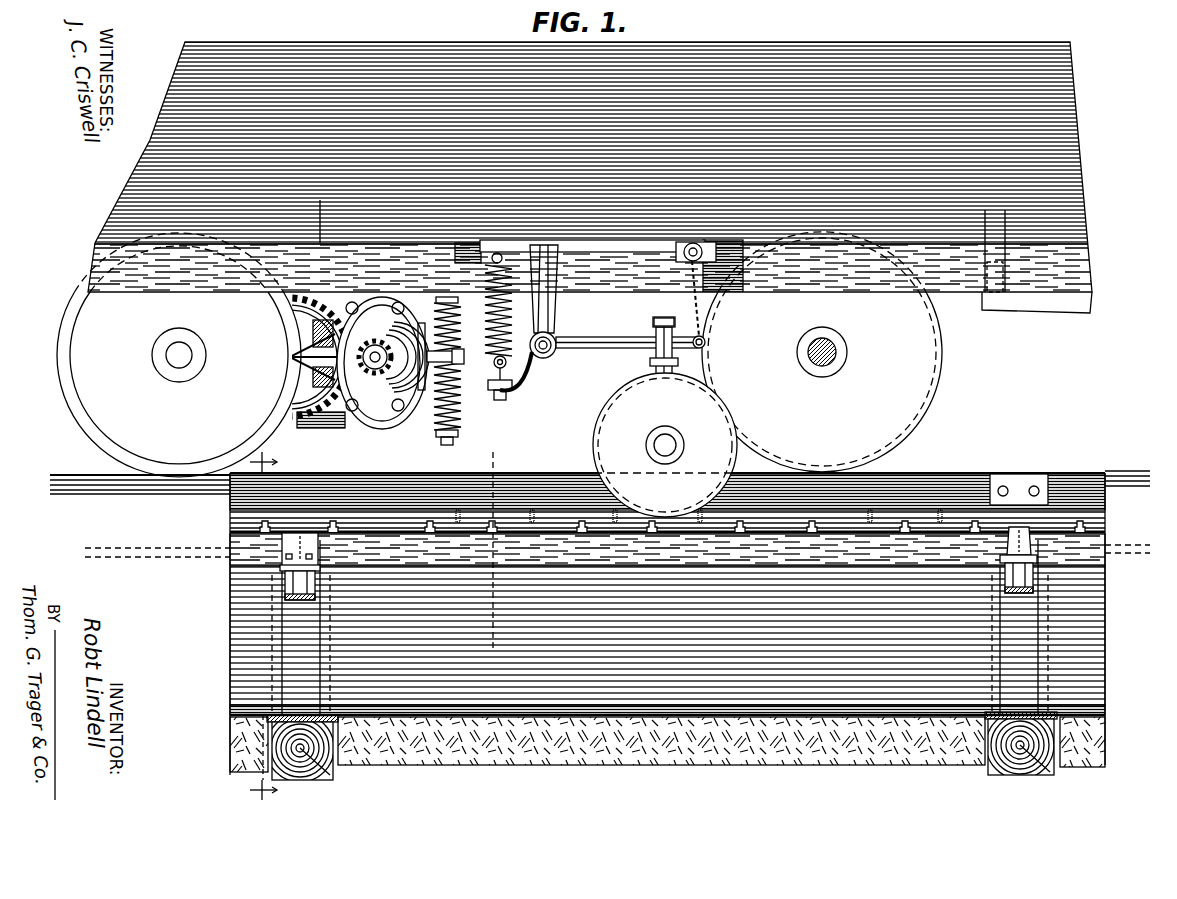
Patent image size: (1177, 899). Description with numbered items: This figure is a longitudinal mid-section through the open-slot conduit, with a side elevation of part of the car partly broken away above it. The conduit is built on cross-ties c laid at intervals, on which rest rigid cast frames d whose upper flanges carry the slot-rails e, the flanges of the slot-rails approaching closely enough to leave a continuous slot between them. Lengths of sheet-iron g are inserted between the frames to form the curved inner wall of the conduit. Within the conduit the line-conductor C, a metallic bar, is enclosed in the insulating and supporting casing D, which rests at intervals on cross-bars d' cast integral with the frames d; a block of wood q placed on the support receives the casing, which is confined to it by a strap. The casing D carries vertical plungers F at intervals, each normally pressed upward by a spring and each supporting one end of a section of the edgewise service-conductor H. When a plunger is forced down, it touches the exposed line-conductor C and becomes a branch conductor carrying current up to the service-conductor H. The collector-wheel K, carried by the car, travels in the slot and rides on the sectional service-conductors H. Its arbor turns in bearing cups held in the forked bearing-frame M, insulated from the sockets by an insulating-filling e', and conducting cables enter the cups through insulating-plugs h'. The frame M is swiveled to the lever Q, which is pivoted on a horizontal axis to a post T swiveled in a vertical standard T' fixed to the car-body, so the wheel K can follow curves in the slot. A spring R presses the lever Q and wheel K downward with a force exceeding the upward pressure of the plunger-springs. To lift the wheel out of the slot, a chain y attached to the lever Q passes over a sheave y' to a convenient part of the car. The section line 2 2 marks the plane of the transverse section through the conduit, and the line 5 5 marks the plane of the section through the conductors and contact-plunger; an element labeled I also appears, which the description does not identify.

The spring R is at (482, 320).
The sheave y' is at (696, 237).
The chain y is at (710, 298).
The vertical standard T' is at (555, 289).
The post T is at (542, 351).
The lever Q is at (576, 350).
The forked bearing-frame M is at (678, 363).
The insulating-plugs h' is at (652, 313).
The slot-rails e is at (600, 481).
The service-conductor H is at (232, 522).
The plungers F is at (580, 533).
The insulating and supporting casing D is at (222, 556).
The line-conductor C is at (113, 547).
The foundation I is at (667, 624).
The cast frames d is at (660, 627).
The block of wood q is at (280, 556).
The cross-bars d' is at (659, 592).
The insulating-filling e' is at (1019, 514).
The cross-ties c is at (322, 780).
The lengths of sheet-iron g is at (667, 744).
The section line 5 5 is at (491, 551).
The section line 2 2 is at (262, 630).
The collector-wheel K is at (647, 444).